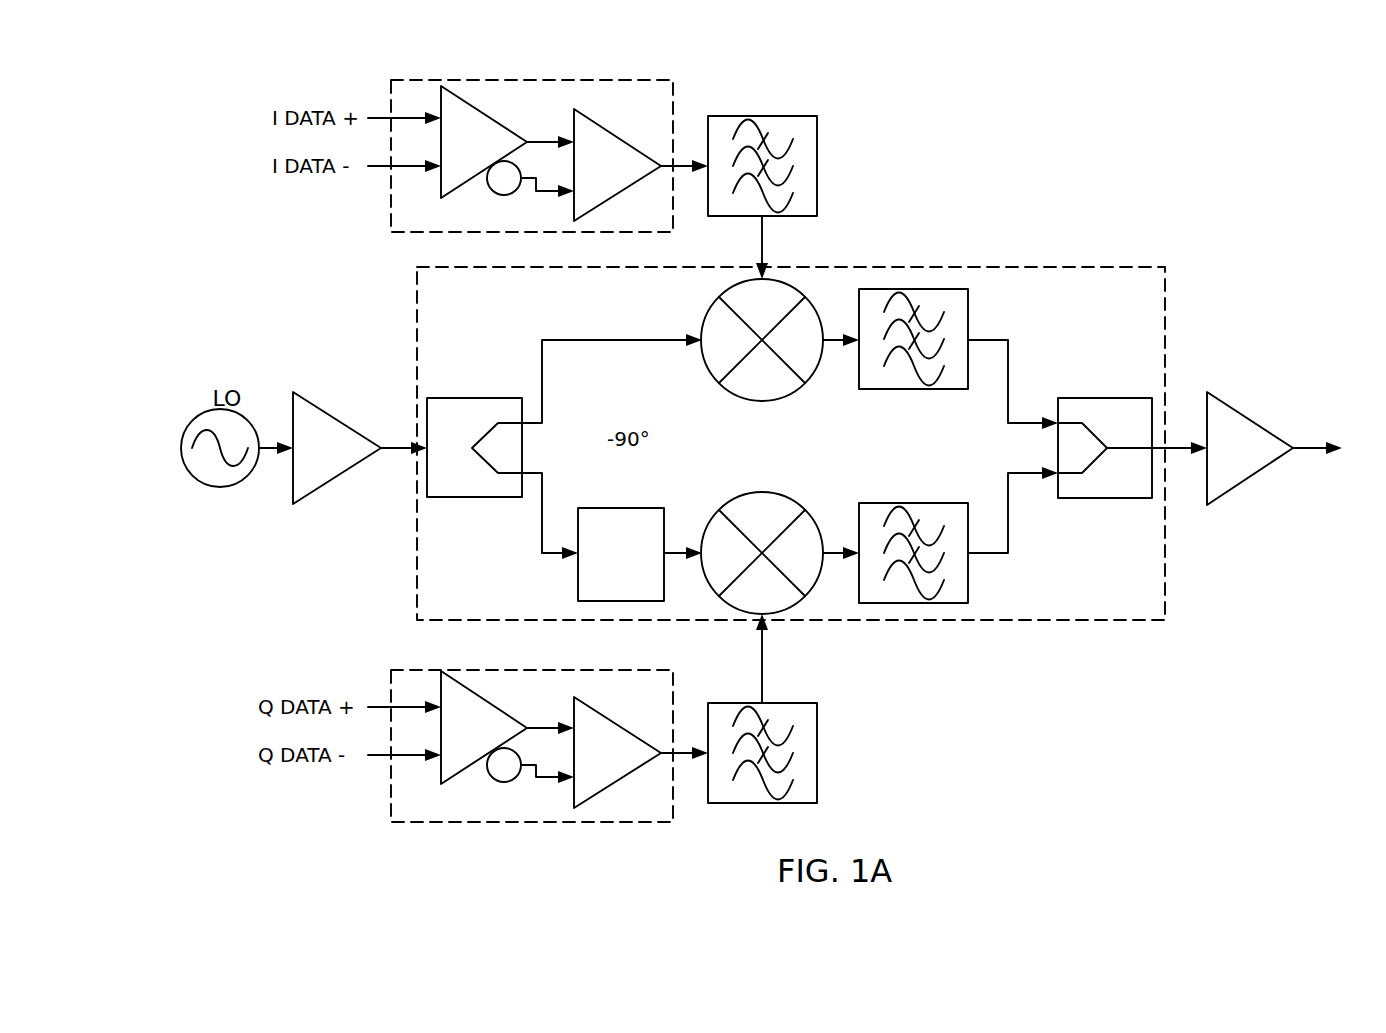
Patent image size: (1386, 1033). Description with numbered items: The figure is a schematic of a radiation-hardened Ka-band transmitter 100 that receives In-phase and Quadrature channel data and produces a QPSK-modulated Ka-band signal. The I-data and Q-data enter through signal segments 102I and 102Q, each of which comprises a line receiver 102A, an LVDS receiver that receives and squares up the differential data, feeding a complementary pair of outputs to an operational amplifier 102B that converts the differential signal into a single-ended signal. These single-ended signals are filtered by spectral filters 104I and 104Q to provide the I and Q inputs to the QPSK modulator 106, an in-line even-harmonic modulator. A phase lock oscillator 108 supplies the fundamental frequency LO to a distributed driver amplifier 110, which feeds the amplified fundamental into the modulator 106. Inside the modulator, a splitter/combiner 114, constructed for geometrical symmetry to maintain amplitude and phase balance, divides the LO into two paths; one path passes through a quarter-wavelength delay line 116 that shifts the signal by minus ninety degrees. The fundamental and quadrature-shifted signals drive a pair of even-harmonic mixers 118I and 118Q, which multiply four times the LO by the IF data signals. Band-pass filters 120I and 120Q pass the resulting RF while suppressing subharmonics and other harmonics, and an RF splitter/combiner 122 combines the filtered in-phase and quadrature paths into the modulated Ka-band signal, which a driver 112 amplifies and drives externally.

The Ka-band transmitter schematic example 100 is at (1102, 692).
The line receiver 102A is at (468, 100).
The operational amplifier 102B is at (590, 116).
The signal segment 102I is at (657, 80).
The signal segment 102Q is at (475, 822).
The spectral filter 104I is at (817, 165).
The spectral filter 104Q is at (817, 755).
The QPSK modulator 106 is at (1105, 267).
The phase lock oscillator 108 is at (248, 418).
The distributed driver amplifier 110 is at (338, 420).
The driver 112 is at (1252, 418).
The splitter/combiner 114 is at (475, 398).
The λ/4 delay line 116 is at (619, 508).
The even-harmonic mixer 118I is at (714, 308).
The even-harmonic mixer 118Q is at (752, 492).
The band-pass filter 120I is at (968, 303).
The band-pass filter 120Q is at (897, 503).
The RF splitter/combiner 122 is at (1104, 398).